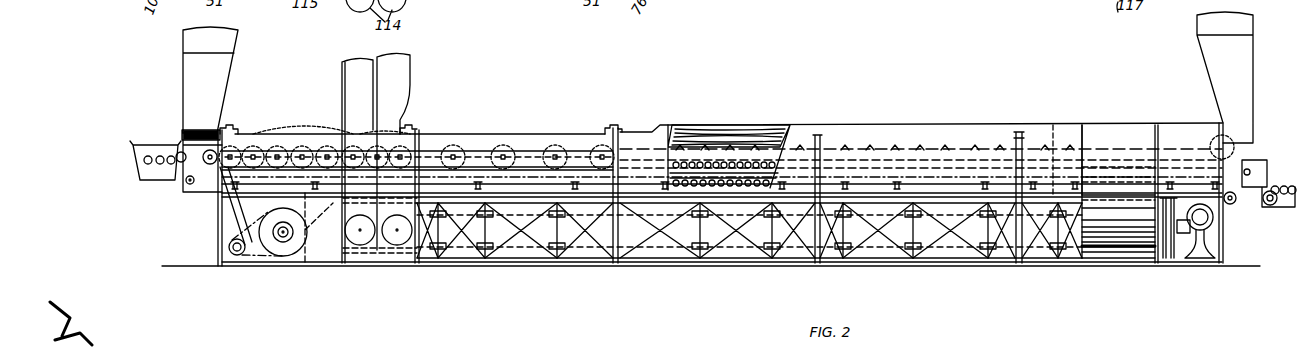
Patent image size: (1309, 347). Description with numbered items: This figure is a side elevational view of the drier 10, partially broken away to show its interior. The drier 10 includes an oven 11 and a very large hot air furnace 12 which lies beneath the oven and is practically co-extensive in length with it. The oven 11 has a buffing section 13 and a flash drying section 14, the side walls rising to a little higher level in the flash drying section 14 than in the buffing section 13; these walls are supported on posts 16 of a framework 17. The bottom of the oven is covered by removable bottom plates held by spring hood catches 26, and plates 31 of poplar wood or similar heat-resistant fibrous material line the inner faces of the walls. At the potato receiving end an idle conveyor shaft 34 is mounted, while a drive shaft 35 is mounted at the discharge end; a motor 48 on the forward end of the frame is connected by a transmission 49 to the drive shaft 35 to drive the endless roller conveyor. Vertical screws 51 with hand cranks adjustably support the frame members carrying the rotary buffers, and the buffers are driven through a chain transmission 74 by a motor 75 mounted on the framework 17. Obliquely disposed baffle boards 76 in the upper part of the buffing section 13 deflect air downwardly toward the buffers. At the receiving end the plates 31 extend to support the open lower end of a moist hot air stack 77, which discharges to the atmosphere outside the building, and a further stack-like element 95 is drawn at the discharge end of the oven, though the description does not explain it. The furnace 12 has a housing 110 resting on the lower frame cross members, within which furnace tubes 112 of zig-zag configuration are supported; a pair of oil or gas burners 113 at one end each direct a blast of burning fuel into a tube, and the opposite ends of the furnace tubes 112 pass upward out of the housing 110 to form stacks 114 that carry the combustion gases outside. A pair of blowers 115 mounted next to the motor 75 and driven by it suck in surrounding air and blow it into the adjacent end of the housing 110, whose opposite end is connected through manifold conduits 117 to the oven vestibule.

The drier 10 is at (768, 100).
The oven 11 is at (864, 130).
The hot air furnace 12 is at (600, 258).
The buffing section 13 is at (442, 140).
The flash drying section 14 is at (805, 136).
The posts 16 is at (218, 230).
The framework 17 is at (208, 251).
The spring hood catches 26 is at (984, 192).
The plates 31 is at (710, 132).
The idle conveyor shaft 34 is at (188, 183).
The drive shaft 35 is at (1260, 172).
The motor 48 is at (1240, 208).
The transmission 49 is at (1234, 203).
The vertical screws 51 is at (243, 129).
The chain transmission 74 is at (227, 206).
The motor 75 is at (240, 258).
The baffle boards 76 is at (303, 127).
The moist hot air stack 77 is at (223, 84).
The hopper 95 is at (1214, 75).
The housing 110 is at (743, 255).
The furnace tubes 112 is at (530, 250).
The oil or gas burners 113 is at (1222, 255).
The stacks 114 is at (342, 90).
The blowers 115 is at (300, 222).
The manifold conduits 117 is at (1134, 131).